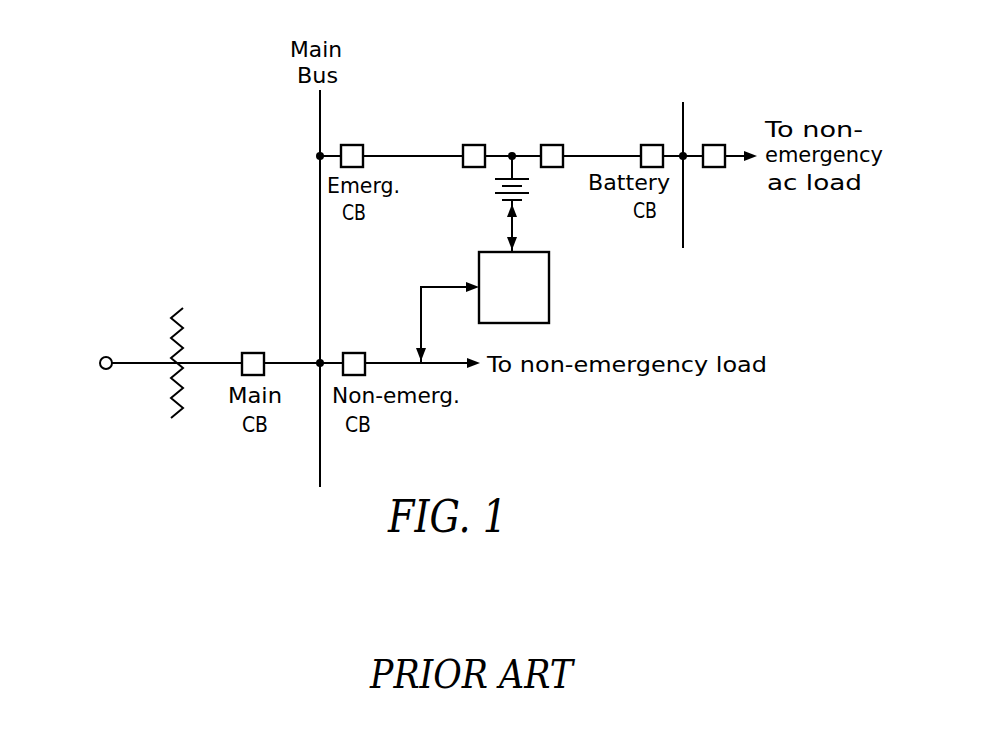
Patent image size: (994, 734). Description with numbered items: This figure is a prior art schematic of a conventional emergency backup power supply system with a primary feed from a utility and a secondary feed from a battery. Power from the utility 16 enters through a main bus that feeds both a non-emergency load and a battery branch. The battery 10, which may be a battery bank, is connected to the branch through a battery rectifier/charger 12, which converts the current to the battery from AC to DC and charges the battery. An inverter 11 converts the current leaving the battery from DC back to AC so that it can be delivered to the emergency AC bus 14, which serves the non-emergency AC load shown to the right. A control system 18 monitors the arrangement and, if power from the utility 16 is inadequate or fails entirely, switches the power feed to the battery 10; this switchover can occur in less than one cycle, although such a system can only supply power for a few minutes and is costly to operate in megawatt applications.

The battery 10 is at (487, 204).
The inverter 11 is at (542, 137).
The battery rectifier/charger 12 is at (456, 137).
The emergency AC bus 14 is at (681, 200).
The utility 16 is at (84, 369).
The control system 18 is at (549, 270).